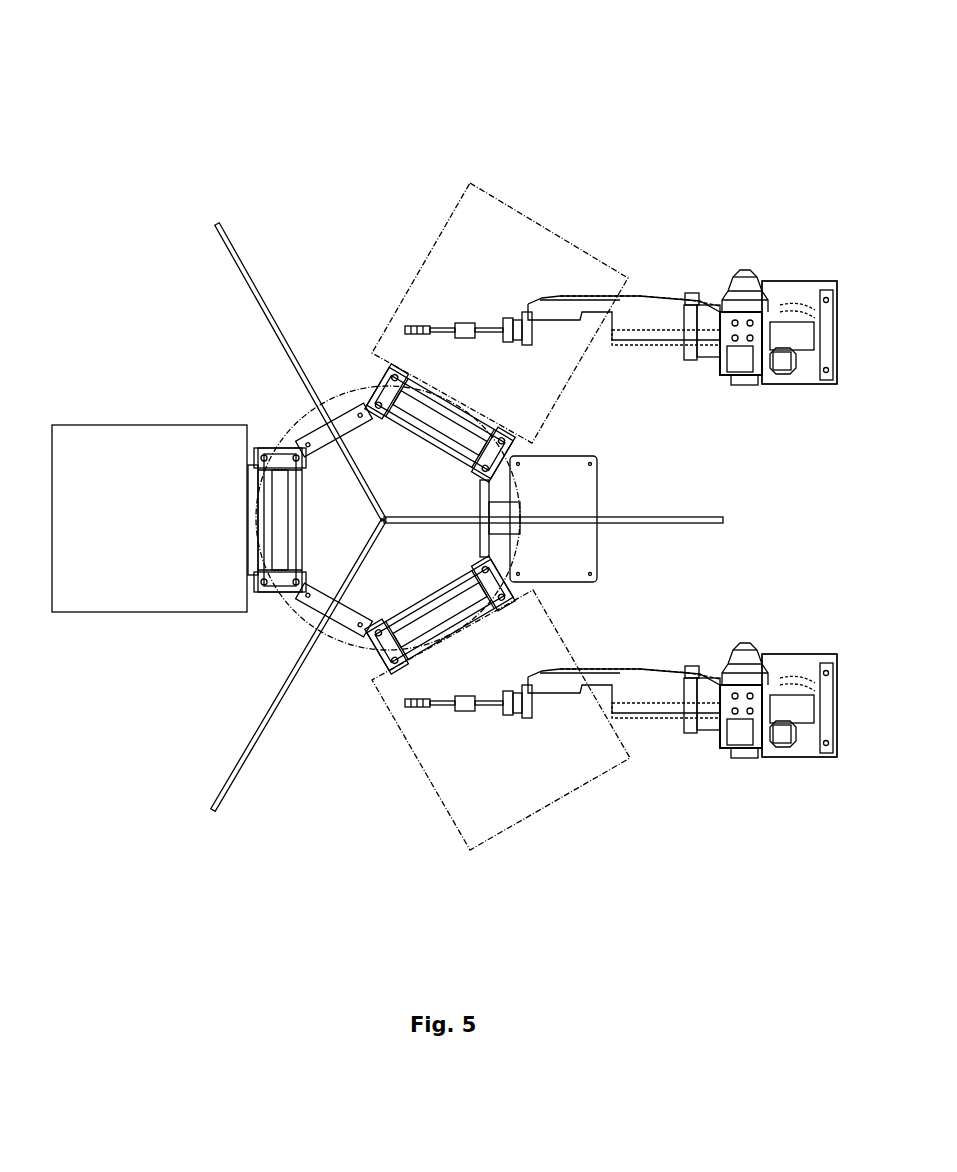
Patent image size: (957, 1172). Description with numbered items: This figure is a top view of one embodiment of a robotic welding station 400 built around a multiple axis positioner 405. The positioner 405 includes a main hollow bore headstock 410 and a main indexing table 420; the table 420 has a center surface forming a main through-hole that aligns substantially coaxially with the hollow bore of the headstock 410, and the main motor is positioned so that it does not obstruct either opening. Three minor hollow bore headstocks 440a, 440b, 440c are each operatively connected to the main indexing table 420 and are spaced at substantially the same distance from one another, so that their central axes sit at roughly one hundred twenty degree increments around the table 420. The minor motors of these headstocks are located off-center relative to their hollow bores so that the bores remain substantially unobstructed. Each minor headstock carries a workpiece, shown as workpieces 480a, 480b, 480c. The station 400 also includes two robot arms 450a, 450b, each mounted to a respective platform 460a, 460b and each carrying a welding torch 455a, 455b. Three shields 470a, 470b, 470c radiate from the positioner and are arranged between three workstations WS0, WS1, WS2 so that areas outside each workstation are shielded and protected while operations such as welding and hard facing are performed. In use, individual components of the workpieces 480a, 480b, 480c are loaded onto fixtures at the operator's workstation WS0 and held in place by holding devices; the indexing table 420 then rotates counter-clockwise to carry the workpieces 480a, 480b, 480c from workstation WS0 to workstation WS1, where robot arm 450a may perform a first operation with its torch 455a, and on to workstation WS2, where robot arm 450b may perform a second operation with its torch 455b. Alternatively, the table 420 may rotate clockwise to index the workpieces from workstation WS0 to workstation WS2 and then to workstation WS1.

The robotic welding station 400 is at (232, 96).
The multiple axis positioner 405 is at (353, 383).
The main hollow bore headstock 410 is at (275, 430).
The main indexing table 420 is at (273, 612).
The minor hollow bore headstock 440a is at (371, 670).
The minor hollow bore headstock 440b is at (518, 450).
The minor hollow bore headstock 440c is at (258, 457).
The robot arm 450a is at (630, 672).
The robot arm 450b is at (618, 296).
The welding torch 455a is at (437, 698).
The welding torch 455b is at (437, 325).
The platform 460a is at (788, 656).
The platform 460b is at (812, 385).
The shield 470a is at (238, 768).
The shield 470b is at (670, 515).
The shield 470c is at (243, 258).
The workpiece 480a is at (538, 222).
The workpiece 480b is at (448, 813).
The workpiece 480c is at (95, 612).
The operator's workstation WS0 is at (170, 652).
The workstation WS1 is at (326, 815).
The workstation WS2 is at (378, 250).